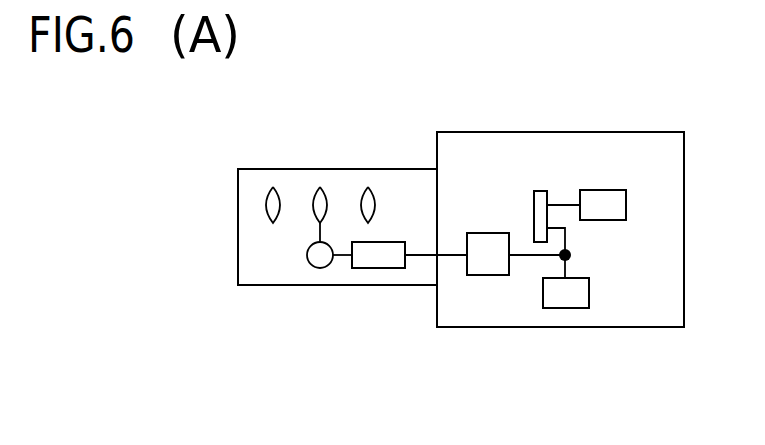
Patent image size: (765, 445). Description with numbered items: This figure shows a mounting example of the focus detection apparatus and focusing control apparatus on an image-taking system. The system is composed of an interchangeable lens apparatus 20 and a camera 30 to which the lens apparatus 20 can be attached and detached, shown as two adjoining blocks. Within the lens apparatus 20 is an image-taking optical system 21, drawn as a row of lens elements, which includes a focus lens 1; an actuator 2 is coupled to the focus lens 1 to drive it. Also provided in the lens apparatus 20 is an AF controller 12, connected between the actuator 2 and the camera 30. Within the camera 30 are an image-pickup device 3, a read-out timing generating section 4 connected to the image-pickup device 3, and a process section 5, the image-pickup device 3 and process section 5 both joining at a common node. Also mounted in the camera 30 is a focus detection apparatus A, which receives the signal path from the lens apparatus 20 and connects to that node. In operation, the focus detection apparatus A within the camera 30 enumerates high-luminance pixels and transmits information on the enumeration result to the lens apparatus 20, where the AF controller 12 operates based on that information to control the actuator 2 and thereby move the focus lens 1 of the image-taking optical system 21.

The focus lens 1 is at (320, 187).
The actuator 2 is at (320, 264).
The image-pickup device 3 is at (538, 191).
The read-out timing generating section 4 is at (602, 192).
The process section 5 is at (575, 304).
The AF controller 12 is at (382, 266).
The interchangeable lens apparatus 20 is at (248, 283).
The image-taking optical system 21 is at (299, 186).
The camera 30 is at (662, 317).
The focus detection apparatus A is at (490, 268).